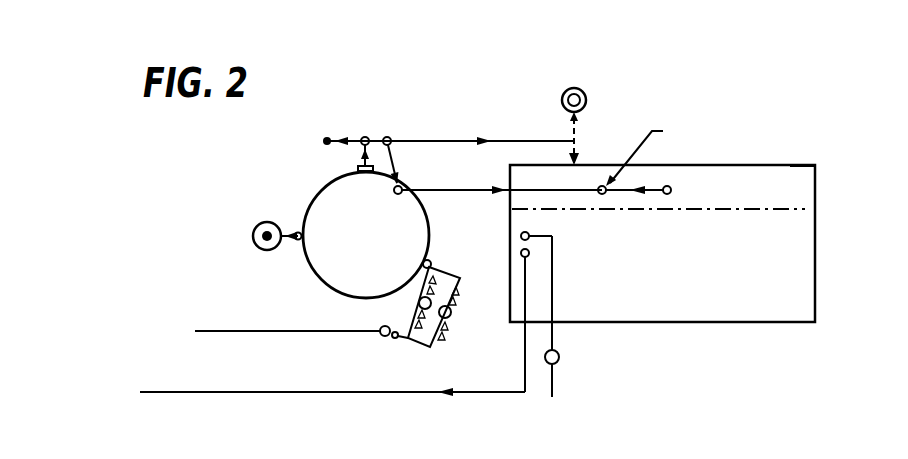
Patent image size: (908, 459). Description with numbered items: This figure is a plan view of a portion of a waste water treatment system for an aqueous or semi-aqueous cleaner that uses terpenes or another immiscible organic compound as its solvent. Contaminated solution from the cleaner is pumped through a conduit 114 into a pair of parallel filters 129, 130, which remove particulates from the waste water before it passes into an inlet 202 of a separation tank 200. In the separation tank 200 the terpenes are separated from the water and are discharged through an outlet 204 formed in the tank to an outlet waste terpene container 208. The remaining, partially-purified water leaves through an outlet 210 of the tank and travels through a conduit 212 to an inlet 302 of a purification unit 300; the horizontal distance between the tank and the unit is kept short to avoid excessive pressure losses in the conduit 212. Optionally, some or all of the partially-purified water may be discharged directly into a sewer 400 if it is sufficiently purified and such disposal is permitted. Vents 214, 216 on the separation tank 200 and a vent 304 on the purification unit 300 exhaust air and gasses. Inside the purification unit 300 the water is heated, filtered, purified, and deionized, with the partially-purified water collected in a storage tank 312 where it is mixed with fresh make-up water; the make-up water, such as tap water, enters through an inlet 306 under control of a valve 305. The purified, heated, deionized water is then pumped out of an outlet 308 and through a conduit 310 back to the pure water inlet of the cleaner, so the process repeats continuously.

The conduit 114 is at (250, 331).
The filter 129 is at (453, 322).
The filter 130 is at (452, 305).
The separation tank 200 is at (331, 180).
The inlet 202 is at (432, 260).
The outlet 204 is at (297, 241).
The outlet waste terpene container 208 is at (257, 224).
The outlet 210 is at (362, 160).
The conduit 212 is at (437, 141).
The vent 214 is at (404, 186).
The vent 216 is at (387, 136).
The purification unit 300 is at (712, 330).
The inlet 302 is at (578, 162).
The vent 304 is at (671, 190).
The valve 305 is at (560, 356).
The inlet 306 is at (553, 385).
The outlet 308 is at (529, 253).
The conduit 310 is at (250, 392).
The storage tank 312 is at (793, 175).
The sewer 400 is at (575, 87).